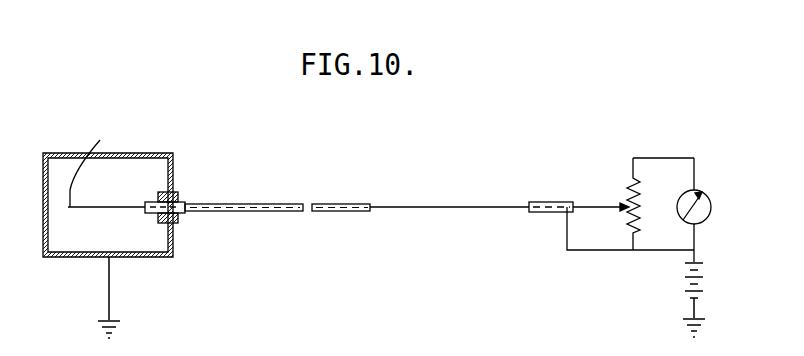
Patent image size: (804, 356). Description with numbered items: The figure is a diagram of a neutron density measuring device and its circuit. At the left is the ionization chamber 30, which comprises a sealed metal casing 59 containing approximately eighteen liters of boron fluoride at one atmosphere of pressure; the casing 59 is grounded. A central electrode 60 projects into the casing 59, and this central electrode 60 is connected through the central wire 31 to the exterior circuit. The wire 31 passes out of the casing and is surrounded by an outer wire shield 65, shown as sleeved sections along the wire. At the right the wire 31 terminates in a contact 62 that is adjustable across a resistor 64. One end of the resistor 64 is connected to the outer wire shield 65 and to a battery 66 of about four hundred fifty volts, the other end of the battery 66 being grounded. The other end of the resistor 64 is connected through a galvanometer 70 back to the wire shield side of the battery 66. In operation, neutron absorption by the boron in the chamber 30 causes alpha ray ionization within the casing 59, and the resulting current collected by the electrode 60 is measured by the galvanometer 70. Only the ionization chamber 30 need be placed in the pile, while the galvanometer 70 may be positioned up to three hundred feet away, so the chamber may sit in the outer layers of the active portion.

The ionization chamber 30 is at (115, 173).
The central wire 31 is at (480, 183).
The sealed metal casing 59 is at (155, 155).
The central electrode 60 is at (106, 165).
The contact 62 is at (600, 203).
The resistor 64 is at (638, 193).
The outer wire shield 65 is at (357, 202).
The battery 66 is at (707, 275).
The galvanometer 70 is at (707, 202).